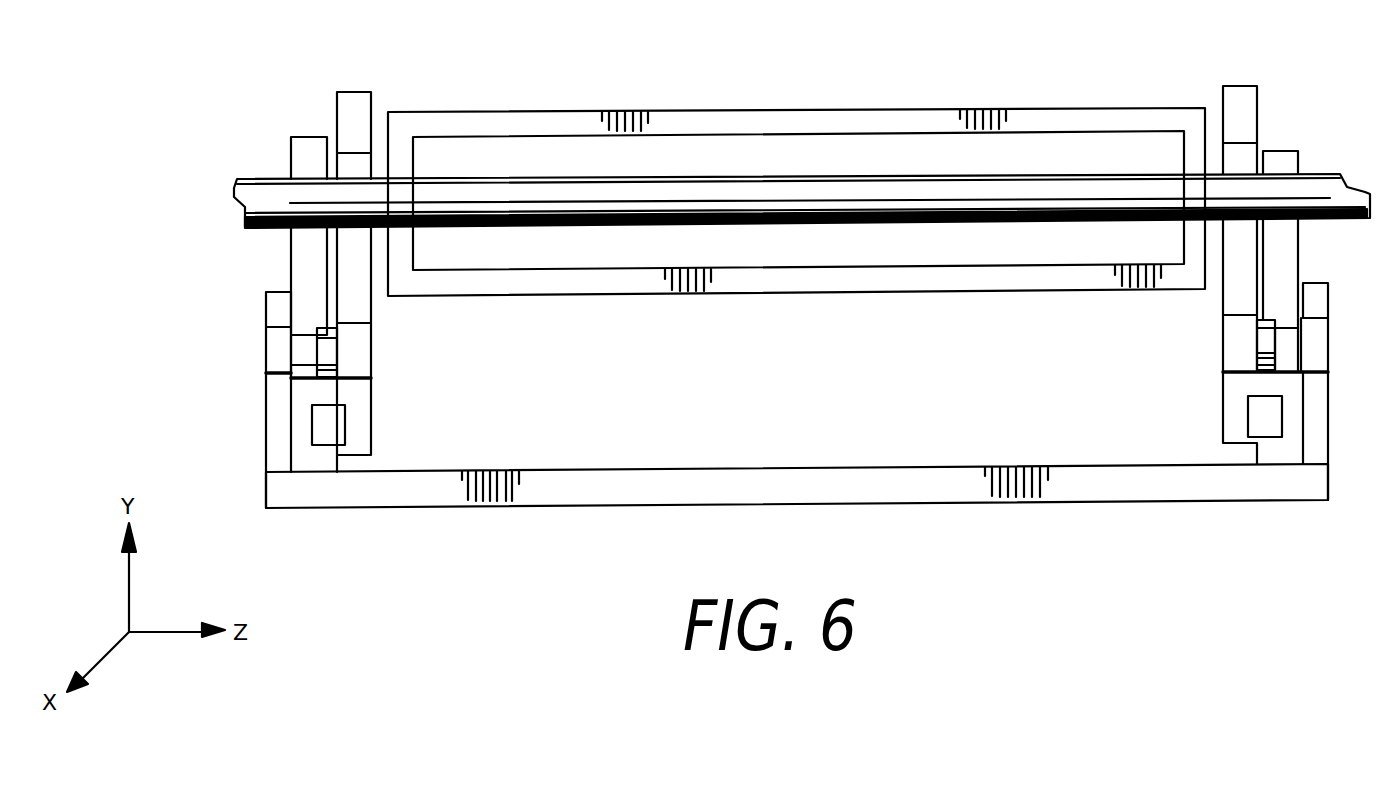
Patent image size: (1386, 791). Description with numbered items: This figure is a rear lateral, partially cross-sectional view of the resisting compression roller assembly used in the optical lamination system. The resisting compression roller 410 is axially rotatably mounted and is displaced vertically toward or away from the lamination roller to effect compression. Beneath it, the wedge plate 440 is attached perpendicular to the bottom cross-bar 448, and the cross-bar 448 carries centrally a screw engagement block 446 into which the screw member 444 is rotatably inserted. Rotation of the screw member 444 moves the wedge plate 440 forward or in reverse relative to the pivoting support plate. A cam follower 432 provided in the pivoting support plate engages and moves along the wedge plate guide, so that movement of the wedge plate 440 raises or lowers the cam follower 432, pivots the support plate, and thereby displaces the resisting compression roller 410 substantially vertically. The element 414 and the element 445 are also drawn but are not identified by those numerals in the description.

The resisting compression roller 410 is at (1053, 117).
The shaft 414 is at (775, 188).
The cam follower 432 is at (268, 357).
The wedge plate 440 is at (273, 443).
The screw member 444 is at (308, 145).
The post 445 is at (355, 108).
The screw engagement block 446 is at (300, 460).
The bottom cross-bar 448 is at (830, 493).